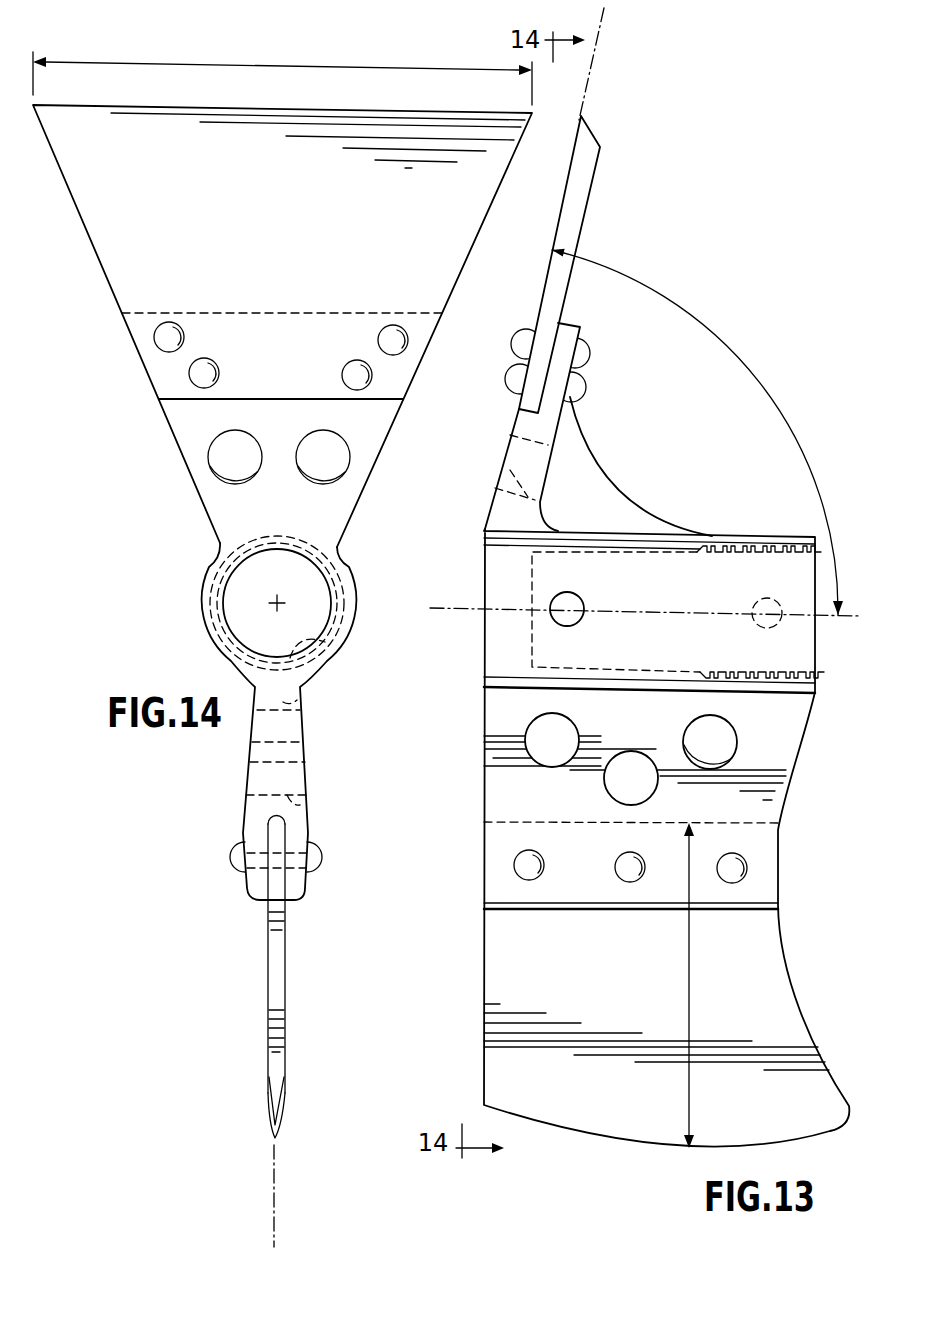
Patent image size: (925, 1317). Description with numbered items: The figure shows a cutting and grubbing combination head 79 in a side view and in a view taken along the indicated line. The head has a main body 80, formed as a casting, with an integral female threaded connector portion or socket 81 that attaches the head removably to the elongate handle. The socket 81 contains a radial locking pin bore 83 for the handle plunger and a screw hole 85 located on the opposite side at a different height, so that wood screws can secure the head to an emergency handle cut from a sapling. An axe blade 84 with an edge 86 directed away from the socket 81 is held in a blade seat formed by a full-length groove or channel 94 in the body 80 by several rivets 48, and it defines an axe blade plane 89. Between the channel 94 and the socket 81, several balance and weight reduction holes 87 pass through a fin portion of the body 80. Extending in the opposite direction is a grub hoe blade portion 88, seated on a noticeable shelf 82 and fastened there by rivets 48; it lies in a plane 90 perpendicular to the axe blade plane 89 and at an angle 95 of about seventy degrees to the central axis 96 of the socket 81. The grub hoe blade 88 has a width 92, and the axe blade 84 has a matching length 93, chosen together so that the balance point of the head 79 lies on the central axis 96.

In FIG. 14, the rivets 48 is at (179, 328).
In FIG. 13, the rivets 48 is at (590, 356).
In FIG. 14, the cutting and grubbing combination head 79 is at (170, 552).
In FIG. 13, the cutting and grubbing combination head 79 is at (725, 274).
In FIG. 14, the main body 80 is at (352, 520).
In FIG. 13, the main body 80 is at (481, 670).
In FIG. 14, the female threaded connector portion or socket 81 is at (333, 653).
In FIG. 13, the female threaded connector portion or socket 81 is at (613, 553).
In FIG. 14, the shelf 82 is at (160, 399).
In FIG. 13, the shelf 82 is at (528, 397).
In FIG. 14, the radial locking pin bore 83 is at (352, 572).
In FIG. 13, the radial locking pin bore 83 is at (570, 626).
In FIG. 14, the axe blade 84 is at (285, 938).
In FIG. 13, the axe blade 84 is at (574, 1118).
In FIG. 14, the screw hole 85 is at (208, 635).
In FIG. 13, the screw hole 85 is at (768, 598).
In FIG. 14, the edge 86 is at (278, 1110).
In FIG. 13, the edge 86 is at (639, 1148).
In FIG. 14, the balance and weight reduction holes 87 is at (210, 465).
In FIG. 13, the balance and weight reduction holes 87 is at (510, 470).
In FIG. 14, the grub hoe blade portion 88 is at (108, 262).
In FIG. 13, the grub hoe blade portion 88 is at (586, 205).
In FIG. 14, the axe blade plane 89 is at (273, 1192).
In FIG. 13, the plane 90 is at (594, 62).
In FIG. 14, the width 92 is at (160, 68).
In FIG. 13, the length 93 is at (689, 1005).
In FIG. 14, the groove or channel 94 is at (270, 828).
In FIG. 13, the groove or channel 94 is at (502, 823).
In FIG. 13, the angle 95 is at (753, 367).
In FIG. 14, the central axis 96 is at (274, 597).
In FIG. 13, the central axis 96 is at (459, 607).